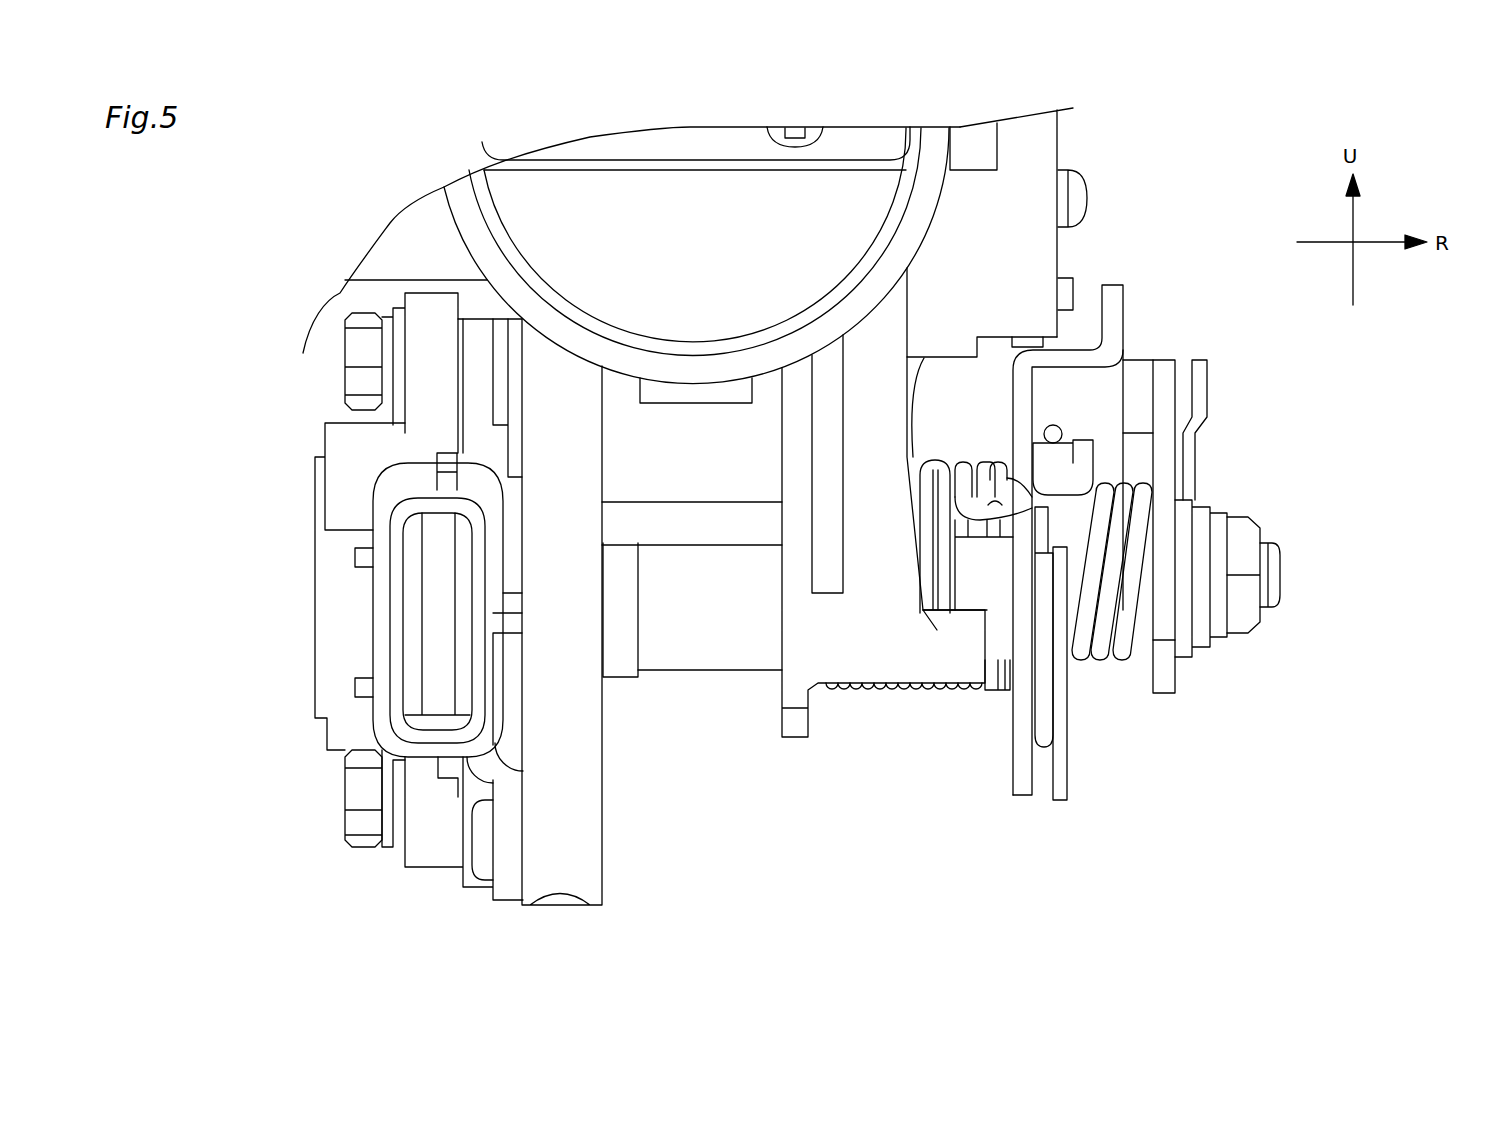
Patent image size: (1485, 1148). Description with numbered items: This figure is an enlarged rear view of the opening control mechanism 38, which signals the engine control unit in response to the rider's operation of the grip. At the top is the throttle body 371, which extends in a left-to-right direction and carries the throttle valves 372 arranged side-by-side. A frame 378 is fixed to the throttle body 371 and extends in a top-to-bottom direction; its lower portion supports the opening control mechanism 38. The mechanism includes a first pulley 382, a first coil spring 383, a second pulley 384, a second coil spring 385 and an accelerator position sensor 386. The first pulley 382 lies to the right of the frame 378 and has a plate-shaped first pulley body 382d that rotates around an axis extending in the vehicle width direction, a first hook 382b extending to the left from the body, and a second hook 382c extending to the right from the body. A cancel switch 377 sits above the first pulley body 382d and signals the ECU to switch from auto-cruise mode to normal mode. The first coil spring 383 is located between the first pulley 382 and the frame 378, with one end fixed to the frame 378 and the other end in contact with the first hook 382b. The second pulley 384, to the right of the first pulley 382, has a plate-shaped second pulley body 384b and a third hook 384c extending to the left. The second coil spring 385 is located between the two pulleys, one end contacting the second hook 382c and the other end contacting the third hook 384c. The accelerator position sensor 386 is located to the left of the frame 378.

The opening control mechanism 38 is at (1167, 288).
The throttle body 371 is at (960, 145).
The throttle valves 372 is at (767, 203).
The cancel switch 377 is at (1030, 340).
The frame 378 is at (585, 828).
The first pulley 382 is at (1025, 780).
The first hook 382b is at (990, 512).
The second hook 382c is at (1080, 460).
The first pulley body 382d is at (1020, 755).
The first coil spring 383 is at (945, 480).
The second pulley 384 is at (1183, 493).
The second pulley body 384b is at (1165, 652).
The third hook 384c is at (1100, 603).
The second coil spring 385 is at (1082, 657).
The accelerator position sensor 386 is at (387, 633).